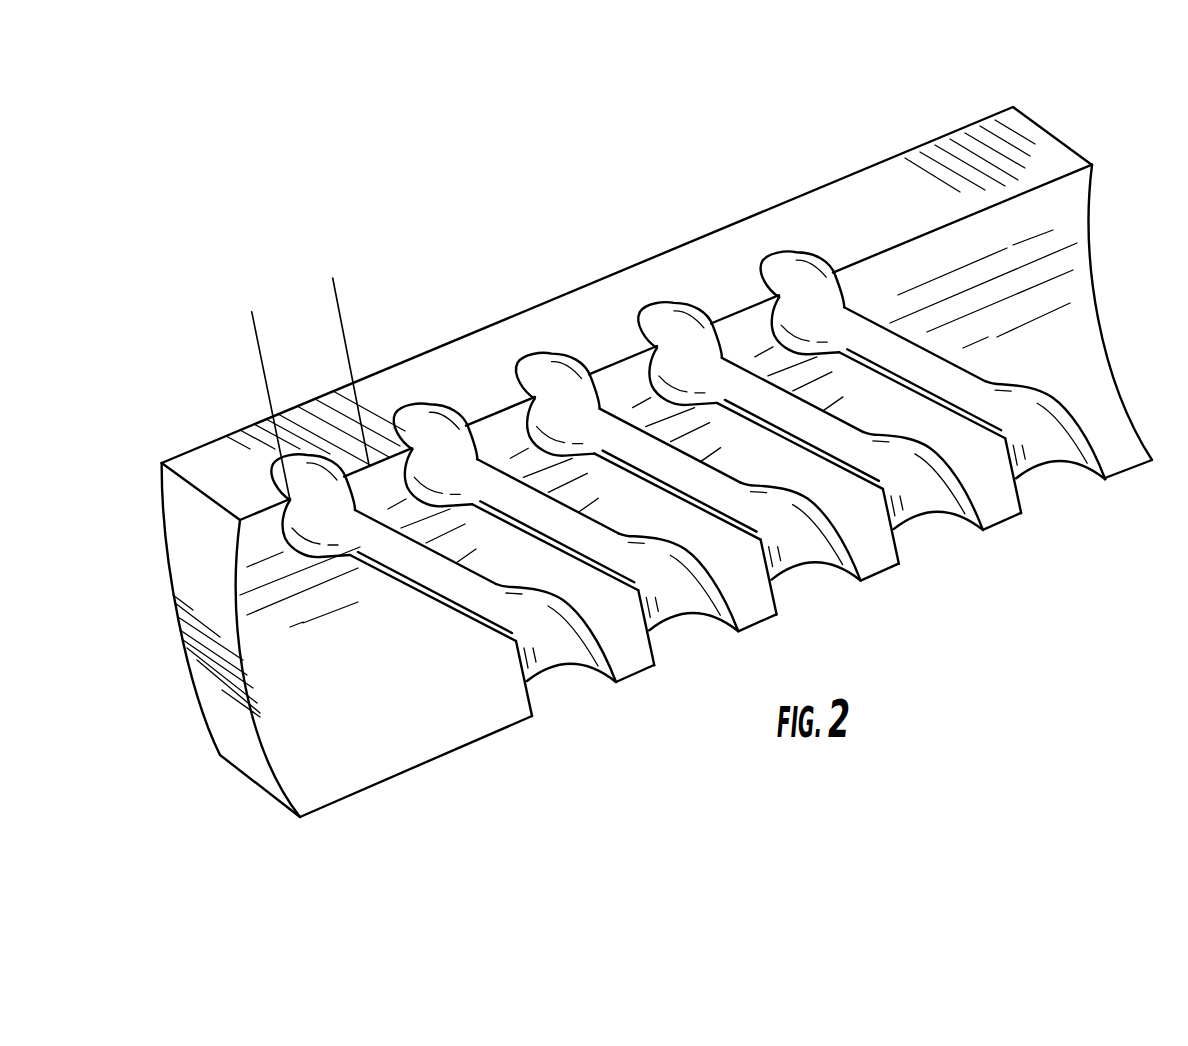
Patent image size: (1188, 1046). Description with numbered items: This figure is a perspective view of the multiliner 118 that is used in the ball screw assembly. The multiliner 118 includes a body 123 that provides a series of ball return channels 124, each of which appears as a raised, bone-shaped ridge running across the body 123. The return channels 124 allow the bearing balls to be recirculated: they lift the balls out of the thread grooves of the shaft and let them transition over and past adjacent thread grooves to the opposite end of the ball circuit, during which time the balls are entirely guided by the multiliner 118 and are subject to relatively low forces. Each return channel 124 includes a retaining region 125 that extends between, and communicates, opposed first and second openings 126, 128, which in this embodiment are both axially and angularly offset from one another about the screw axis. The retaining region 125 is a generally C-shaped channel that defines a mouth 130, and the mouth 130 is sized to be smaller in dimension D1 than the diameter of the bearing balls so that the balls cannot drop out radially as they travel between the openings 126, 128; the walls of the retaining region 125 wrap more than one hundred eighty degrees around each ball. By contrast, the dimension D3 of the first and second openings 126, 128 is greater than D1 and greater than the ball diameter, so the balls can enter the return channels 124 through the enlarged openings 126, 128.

The multiliner 118 is at (1046, 265).
The body 123 is at (308, 740).
The ball return channels 124 is at (1010, 349).
The retaining region 125 is at (918, 341).
The first opening 126 is at (802, 230).
The second opening 128 is at (1058, 492).
The mouth 130 is at (883, 390).
The dimension of the mouth D1 is at (483, 573).
The dimension of the first and second openings D3 is at (258, 358).